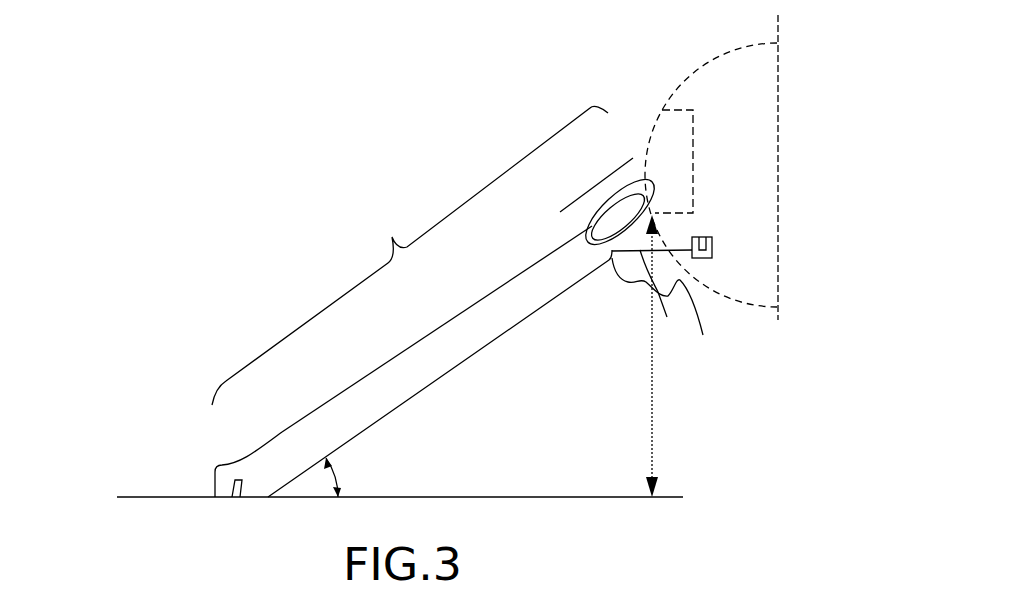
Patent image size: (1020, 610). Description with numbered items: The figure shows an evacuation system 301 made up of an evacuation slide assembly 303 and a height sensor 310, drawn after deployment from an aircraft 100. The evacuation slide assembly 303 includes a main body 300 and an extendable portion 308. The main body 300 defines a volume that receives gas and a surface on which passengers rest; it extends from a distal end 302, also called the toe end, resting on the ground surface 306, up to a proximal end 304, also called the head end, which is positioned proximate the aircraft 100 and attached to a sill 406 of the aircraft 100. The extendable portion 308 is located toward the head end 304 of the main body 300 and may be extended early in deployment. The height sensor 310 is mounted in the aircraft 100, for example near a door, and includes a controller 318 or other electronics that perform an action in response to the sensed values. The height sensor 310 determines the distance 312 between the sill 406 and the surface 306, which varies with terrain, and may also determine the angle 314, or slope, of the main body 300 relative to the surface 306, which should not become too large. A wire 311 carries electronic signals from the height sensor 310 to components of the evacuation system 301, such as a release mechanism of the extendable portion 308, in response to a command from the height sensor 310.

The aircraft 100 is at (747, 121).
The main body 300 is at (365, 373).
The evacuation system 301 is at (231, 176).
The distal end 302 is at (215, 470).
The evacuation slide assembly 303 is at (410, 255).
The proximal end 304 is at (664, 300).
The surface 306 is at (130, 497).
The extendable portion 308 is at (594, 188).
The height sensor 310 is at (712, 252).
The wire 311 is at (670, 312).
The distance 312 is at (651, 410).
The angle 314 is at (334, 487).
The controller 318 is at (704, 240).
The sill 406 is at (657, 210).